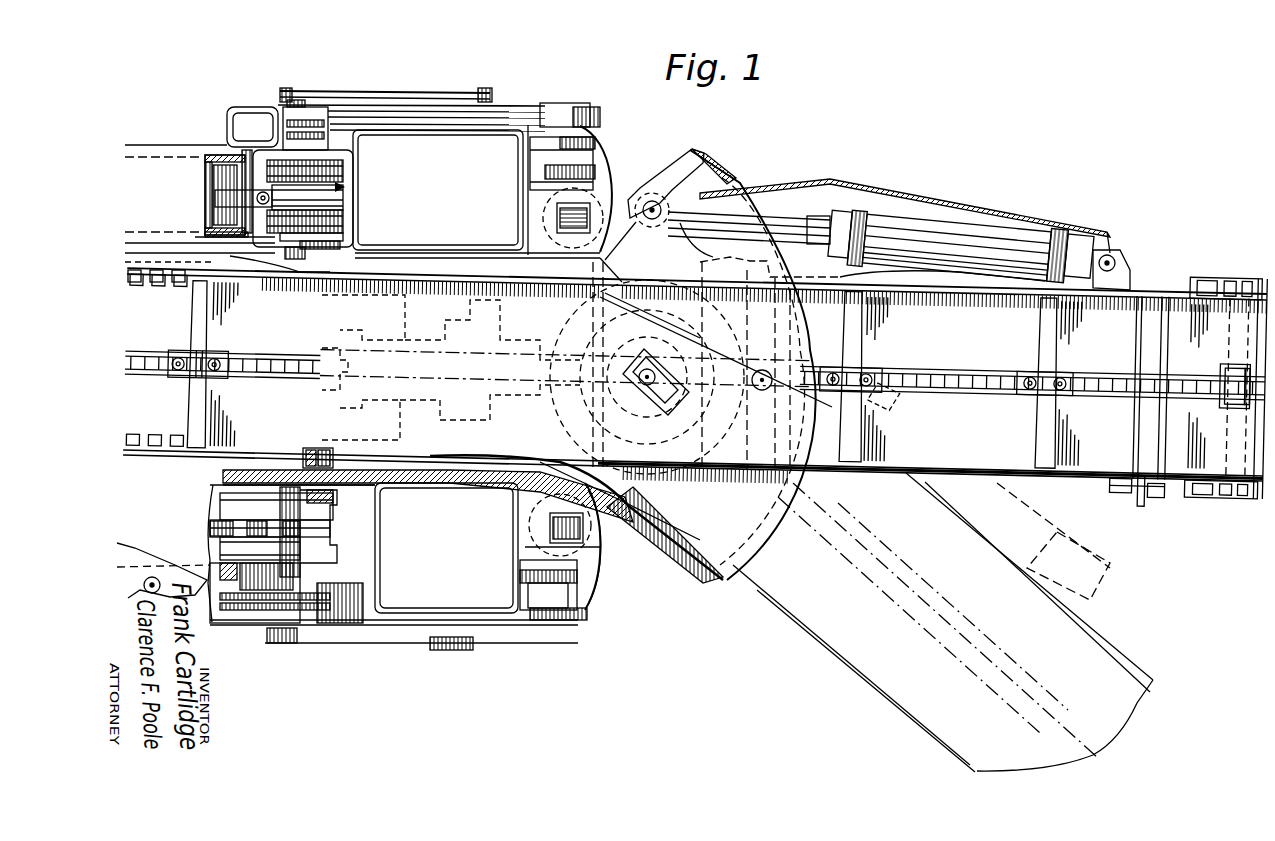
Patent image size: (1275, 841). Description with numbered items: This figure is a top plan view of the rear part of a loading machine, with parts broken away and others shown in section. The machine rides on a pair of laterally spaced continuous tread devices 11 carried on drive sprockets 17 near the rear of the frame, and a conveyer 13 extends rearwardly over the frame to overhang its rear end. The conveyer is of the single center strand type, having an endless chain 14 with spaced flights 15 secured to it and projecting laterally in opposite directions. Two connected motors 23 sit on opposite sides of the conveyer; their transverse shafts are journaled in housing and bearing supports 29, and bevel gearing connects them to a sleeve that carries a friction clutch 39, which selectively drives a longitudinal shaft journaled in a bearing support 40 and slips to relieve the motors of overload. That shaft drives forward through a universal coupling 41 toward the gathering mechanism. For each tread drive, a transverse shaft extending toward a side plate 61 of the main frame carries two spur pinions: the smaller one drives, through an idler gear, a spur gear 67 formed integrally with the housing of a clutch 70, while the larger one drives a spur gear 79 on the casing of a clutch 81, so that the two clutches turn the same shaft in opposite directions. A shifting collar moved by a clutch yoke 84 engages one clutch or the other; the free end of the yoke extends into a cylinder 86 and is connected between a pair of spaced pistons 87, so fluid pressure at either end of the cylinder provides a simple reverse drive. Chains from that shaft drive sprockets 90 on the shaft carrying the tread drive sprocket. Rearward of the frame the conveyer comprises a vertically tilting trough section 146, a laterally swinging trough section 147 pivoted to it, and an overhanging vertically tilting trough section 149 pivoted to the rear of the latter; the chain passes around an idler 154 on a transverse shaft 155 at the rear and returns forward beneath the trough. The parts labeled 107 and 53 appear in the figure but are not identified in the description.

The frame tube 107 is at (168, 118).
The cylinder 86 is at (208, 156).
The clutch yoke 84 is at (259, 152).
The pistons 87 is at (218, 183).
The spur gear 67 is at (348, 180).
The clutch 70 is at (348, 189).
The spur gear 79 is at (348, 228).
The clutch 81 is at (355, 236).
The motors 23 is at (531, 128).
The casing 53 is at (600, 150).
The overhanging vertically tilting trough section 149 is at (1176, 284).
The flights 15 is at (188, 328).
The endless chain 14 is at (262, 364).
The conveyer 13 is at (158, 384).
The universal coupling 41 is at (347, 345).
The bearing support 40 is at (380, 343).
The housing and bearing supports 29 is at (438, 318).
The friction clutch 39 is at (490, 365).
The side plate 61 is at (284, 453).
The vertically tilting trough section 146 is at (367, 455).
The drive sprockets 17 is at (330, 527).
The continuous tread devices 11 is at (330, 545).
The sprockets 90 is at (255, 620).
The idler 154 is at (1220, 362).
The transverse shaft 155 is at (1228, 438).
The laterally swinging trough section 147 is at (1078, 462).